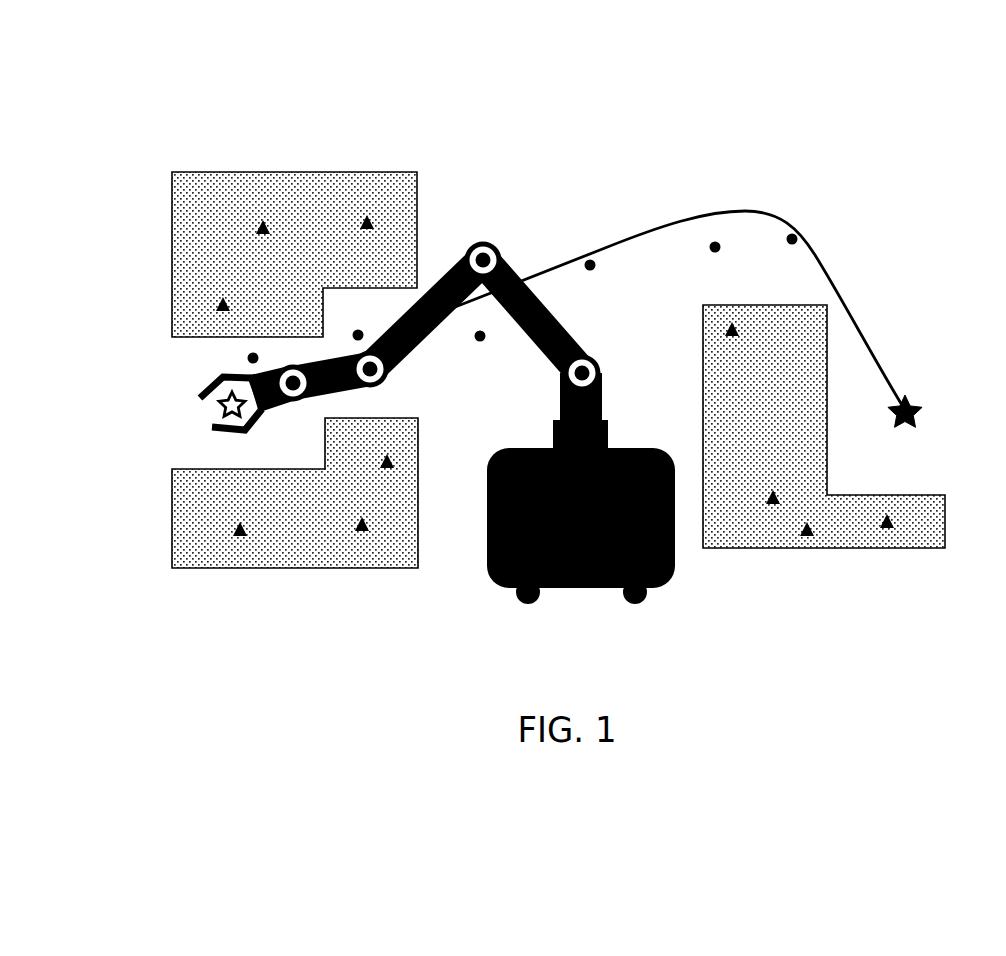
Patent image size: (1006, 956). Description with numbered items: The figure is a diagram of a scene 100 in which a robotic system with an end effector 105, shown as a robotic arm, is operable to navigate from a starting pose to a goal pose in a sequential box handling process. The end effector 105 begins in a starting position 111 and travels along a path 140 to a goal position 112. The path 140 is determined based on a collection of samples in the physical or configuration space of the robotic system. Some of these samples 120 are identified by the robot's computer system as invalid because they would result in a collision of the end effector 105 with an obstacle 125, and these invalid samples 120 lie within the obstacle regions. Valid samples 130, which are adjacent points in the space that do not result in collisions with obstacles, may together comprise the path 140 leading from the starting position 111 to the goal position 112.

The scene 100 is at (568, 327).
The end effector 105 is at (572, 336).
The starting position 111 is at (222, 405).
The goal position 112 is at (918, 419).
The invalid samples 120 is at (265, 236).
The obstacle 125 is at (297, 172).
The valid samples 130 is at (476, 345).
The path 140 is at (757, 212).